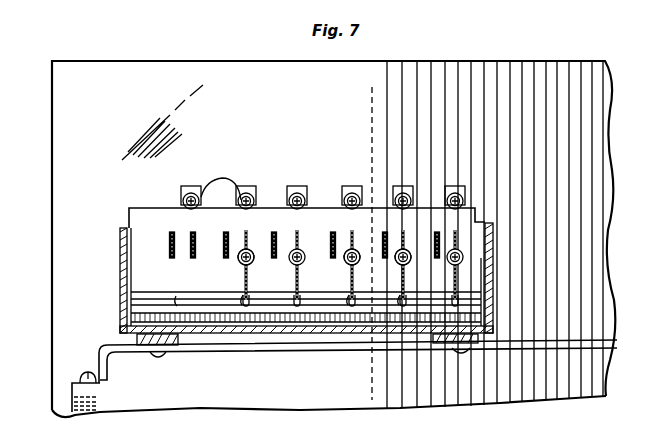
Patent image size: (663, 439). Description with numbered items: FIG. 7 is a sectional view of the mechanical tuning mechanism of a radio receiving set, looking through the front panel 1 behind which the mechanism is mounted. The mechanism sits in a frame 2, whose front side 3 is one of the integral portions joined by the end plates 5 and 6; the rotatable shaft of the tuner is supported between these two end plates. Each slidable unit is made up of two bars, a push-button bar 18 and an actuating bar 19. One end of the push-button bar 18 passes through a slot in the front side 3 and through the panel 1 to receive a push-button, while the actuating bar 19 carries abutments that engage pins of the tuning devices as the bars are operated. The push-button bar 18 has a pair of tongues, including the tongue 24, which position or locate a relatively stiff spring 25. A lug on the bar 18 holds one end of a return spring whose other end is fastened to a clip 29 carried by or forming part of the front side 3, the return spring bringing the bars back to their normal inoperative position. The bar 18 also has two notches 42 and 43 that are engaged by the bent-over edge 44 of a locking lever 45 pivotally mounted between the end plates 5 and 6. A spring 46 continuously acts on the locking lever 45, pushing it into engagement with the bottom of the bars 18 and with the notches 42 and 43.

The front panel 1 is at (220, 70).
The frame 2 is at (118, 325).
The front side of frame 3 is at (155, 220).
The end plate 5 is at (118, 297).
The end plate 6 is at (492, 290).
The push-button bar 18 is at (240, 292).
The actuating bar 19 is at (170, 251).
The tongue 24 is at (346, 261).
The spring 25 is at (253, 262).
The clip 29 is at (472, 169).
The notch 42 is at (177, 298).
The notch 43 is at (243, 294).
The bent-over edge 44 is at (124, 275).
The locking lever 45 is at (240, 338).
The spring 46 is at (345, 305).